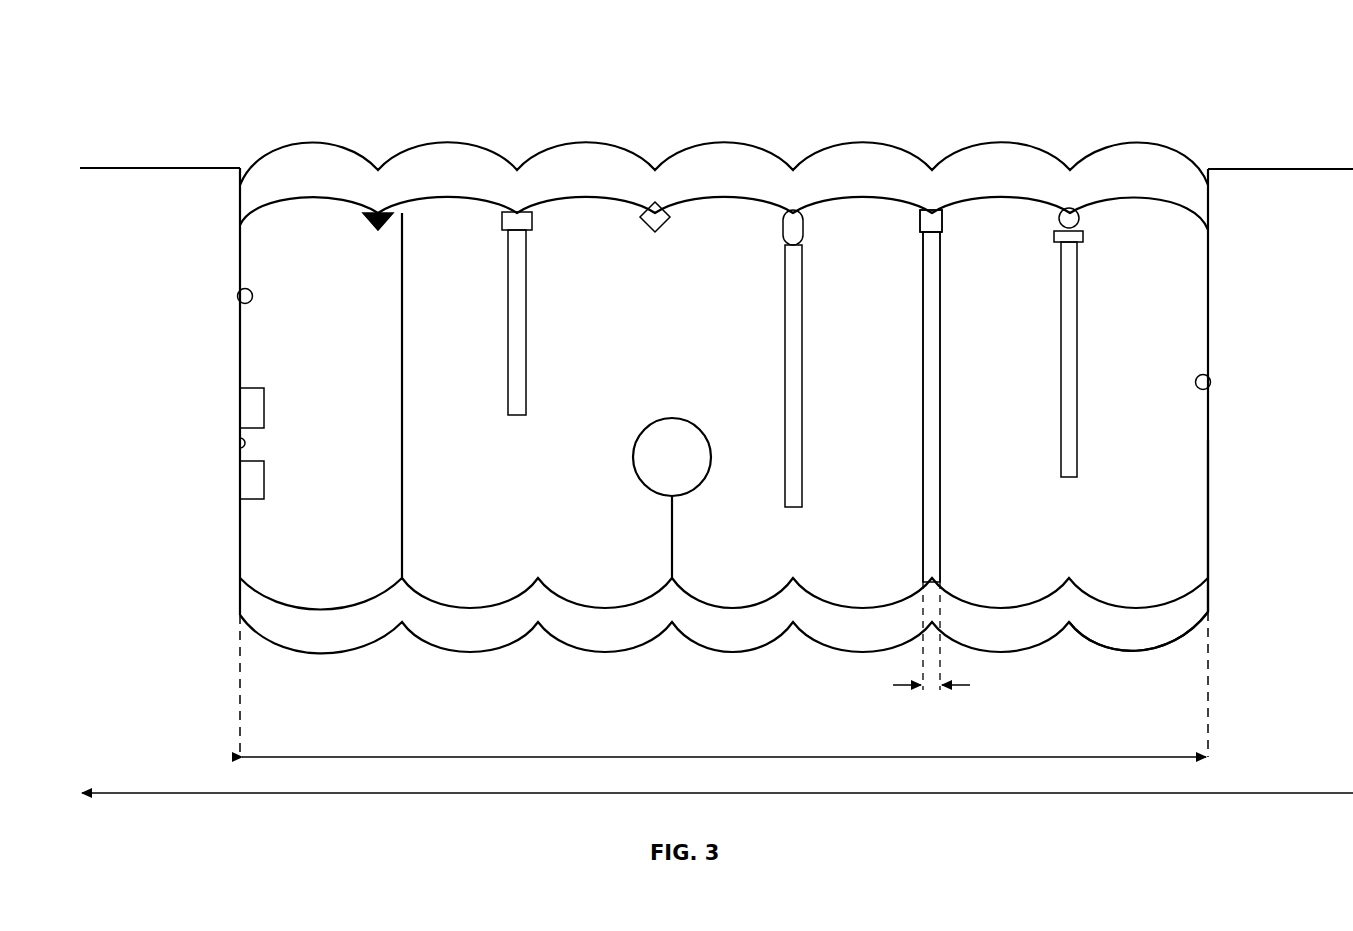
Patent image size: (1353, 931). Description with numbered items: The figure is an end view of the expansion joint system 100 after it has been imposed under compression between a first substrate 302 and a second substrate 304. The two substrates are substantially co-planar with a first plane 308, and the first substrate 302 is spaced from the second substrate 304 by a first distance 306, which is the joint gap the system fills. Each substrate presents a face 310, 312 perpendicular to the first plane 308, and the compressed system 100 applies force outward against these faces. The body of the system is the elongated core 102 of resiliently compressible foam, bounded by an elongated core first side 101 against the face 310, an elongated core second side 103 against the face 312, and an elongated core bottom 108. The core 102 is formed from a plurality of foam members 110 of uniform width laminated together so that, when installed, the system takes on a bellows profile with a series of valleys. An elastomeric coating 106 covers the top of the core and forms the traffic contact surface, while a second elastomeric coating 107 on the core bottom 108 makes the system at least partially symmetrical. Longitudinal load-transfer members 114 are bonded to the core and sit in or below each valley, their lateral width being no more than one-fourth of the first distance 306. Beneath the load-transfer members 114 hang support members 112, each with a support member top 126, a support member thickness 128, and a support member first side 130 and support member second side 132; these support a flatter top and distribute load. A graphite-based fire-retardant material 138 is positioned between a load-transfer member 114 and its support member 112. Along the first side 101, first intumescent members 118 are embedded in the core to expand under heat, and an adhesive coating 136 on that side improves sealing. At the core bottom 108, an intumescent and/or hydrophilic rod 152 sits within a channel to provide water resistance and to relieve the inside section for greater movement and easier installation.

The expansion joint system 100 is at (193, 78).
The elongated core first side 101 is at (240, 555).
The elongated core 102 is at (1192, 285).
The elongated core second side 103 is at (1208, 514).
The elastomeric coating 106 is at (723, 158).
The elastomeric coating 107 is at (605, 630).
The elongated core bottom 108 is at (1125, 610).
The foam member 110 is at (318, 590).
The support member 112 is at (515, 330).
The longitudinal load-transfer member 114 is at (378, 213).
The first intumescent member 118 is at (250, 405).
The support member top 126 is at (942, 230).
The support member thickness 128 is at (912, 685).
The support member first side 130 is at (922, 512).
The support member second side 132 is at (940, 512).
The adhesive coating 136 is at (248, 445).
The graphite-based fire-retardant material 138 is at (1085, 237).
The hydrophilic rod 152 is at (670, 418).
The first substrate 302 is at (160, 168).
The second substrate 304 is at (1243, 168).
The first distance 306 is at (722, 757).
The first plane 308 is at (725, 793).
The face 310 is at (238, 298).
The face 312 is at (1210, 386).